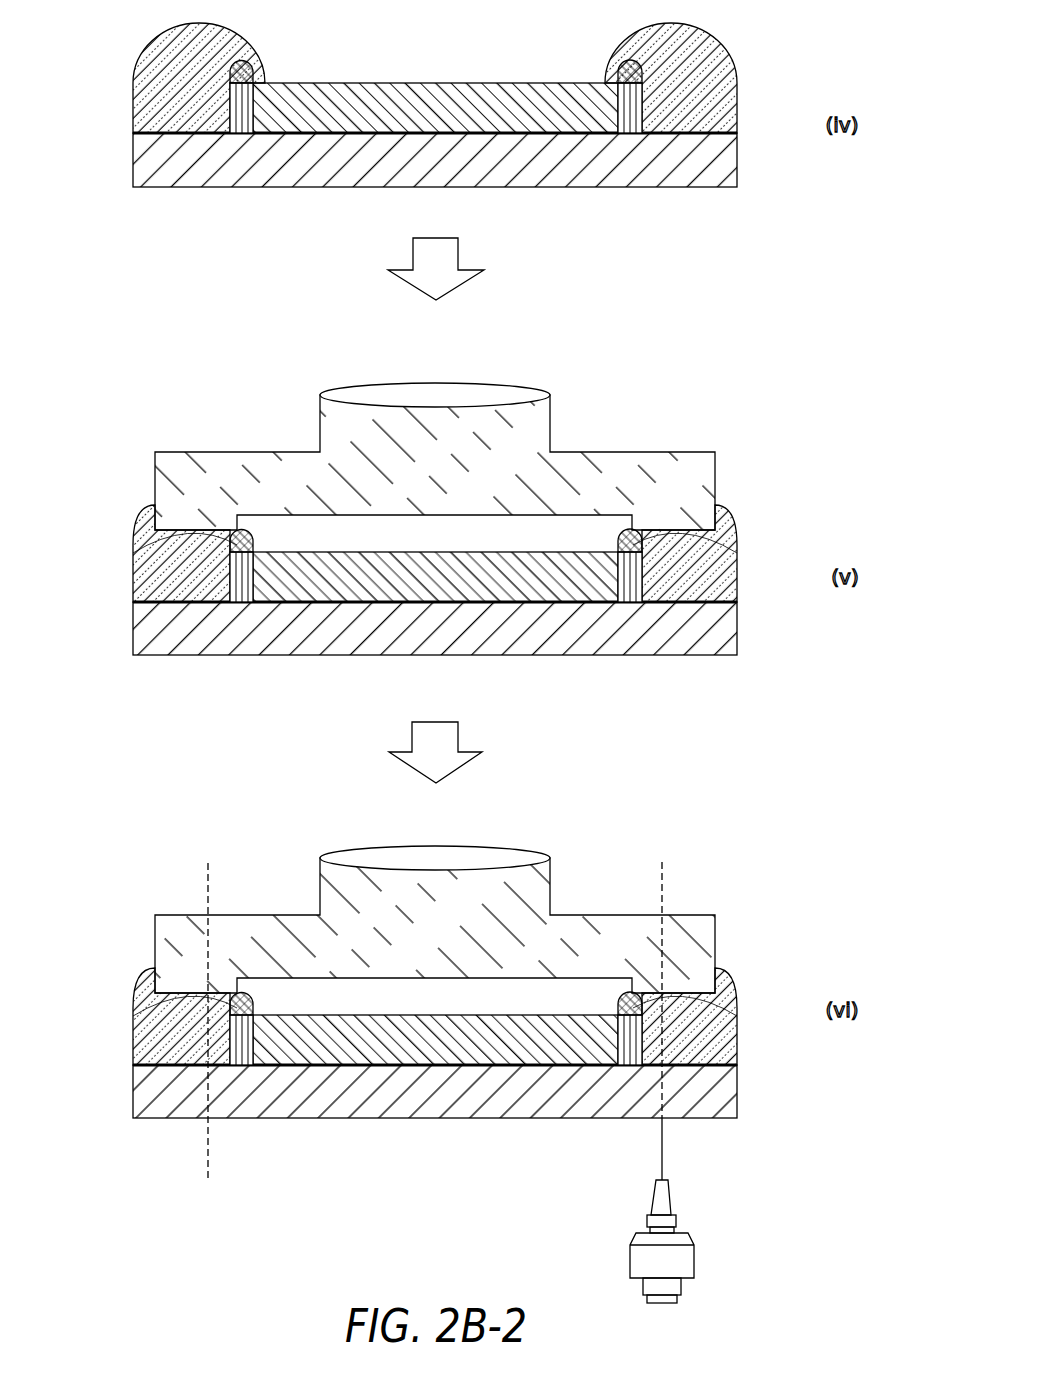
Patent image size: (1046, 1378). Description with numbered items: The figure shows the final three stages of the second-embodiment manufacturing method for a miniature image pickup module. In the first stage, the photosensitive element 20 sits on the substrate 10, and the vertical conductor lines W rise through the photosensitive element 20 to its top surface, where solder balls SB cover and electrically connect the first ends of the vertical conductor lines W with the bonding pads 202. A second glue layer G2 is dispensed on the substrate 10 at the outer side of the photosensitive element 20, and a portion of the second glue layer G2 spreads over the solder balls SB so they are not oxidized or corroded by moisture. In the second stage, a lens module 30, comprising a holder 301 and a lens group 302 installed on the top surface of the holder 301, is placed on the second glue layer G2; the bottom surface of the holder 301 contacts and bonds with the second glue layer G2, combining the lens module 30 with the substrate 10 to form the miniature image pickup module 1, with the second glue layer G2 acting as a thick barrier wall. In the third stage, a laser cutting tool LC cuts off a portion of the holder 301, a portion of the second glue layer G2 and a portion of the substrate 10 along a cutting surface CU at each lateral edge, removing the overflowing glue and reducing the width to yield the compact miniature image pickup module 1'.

The miniature image pickup module 1 is at (409, 519).
The compact miniature image pickup module 1' is at (402, 982).
The substrate 10 is at (145, 170).
The photosensitive element 20 is at (447, 97).
The bonding pads 202 is at (563, 1046).
The lens module 30 is at (293, 912).
The holder 301 is at (625, 470).
The lens group 302 is at (402, 400).
The second glue layer G2 is at (150, 80).
The solder balls SB is at (258, 66).
The cutting surface CU is at (207, 1152).
The vertical conductor lines W is at (621, 1066).
The laser cutting tool LC is at (680, 1258).